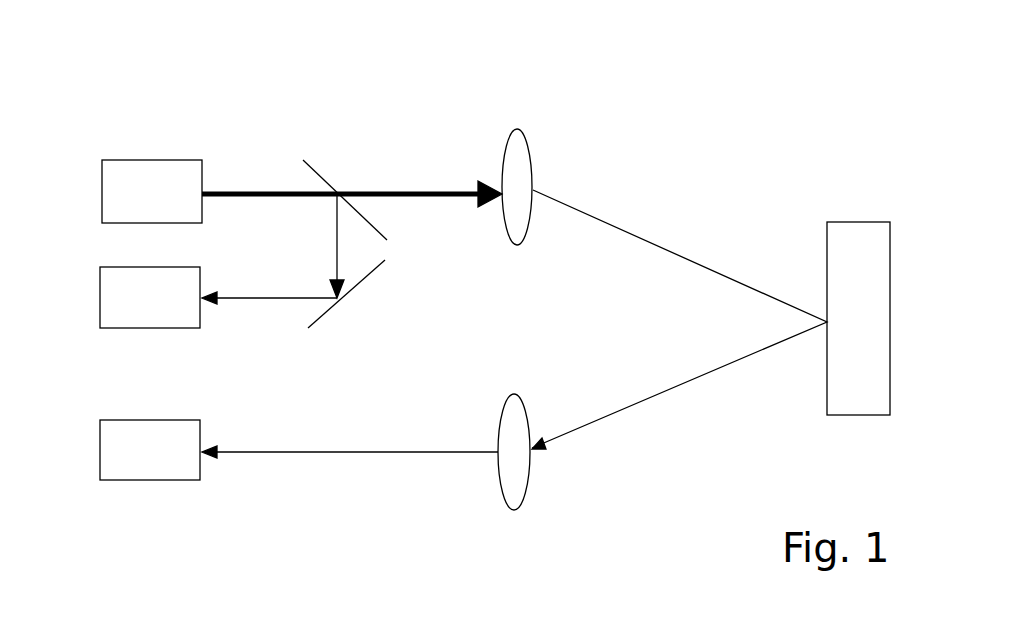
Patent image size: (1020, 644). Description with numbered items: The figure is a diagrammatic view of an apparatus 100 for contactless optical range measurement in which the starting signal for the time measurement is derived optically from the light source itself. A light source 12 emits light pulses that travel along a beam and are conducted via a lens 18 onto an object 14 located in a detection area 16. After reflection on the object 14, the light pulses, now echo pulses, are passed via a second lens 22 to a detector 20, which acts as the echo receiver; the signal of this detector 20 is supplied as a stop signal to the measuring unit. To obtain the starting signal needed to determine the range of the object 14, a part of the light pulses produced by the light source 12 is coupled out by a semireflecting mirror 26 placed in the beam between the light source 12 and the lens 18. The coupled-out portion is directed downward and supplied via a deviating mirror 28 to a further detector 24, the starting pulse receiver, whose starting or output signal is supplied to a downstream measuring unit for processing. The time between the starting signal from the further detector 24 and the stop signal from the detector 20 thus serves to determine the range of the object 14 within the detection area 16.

The apparatus 100 is at (195, 123).
The light source 12 is at (185, 212).
The object 14 is at (880, 336).
The detection area 16 is at (798, 141).
The lens 18 is at (515, 158).
The detector 20 is at (178, 467).
The lens 22 is at (515, 470).
The further detector 24 is at (188, 312).
The semireflecting mirror 26 is at (320, 173).
The deviating mirror 28 is at (362, 283).